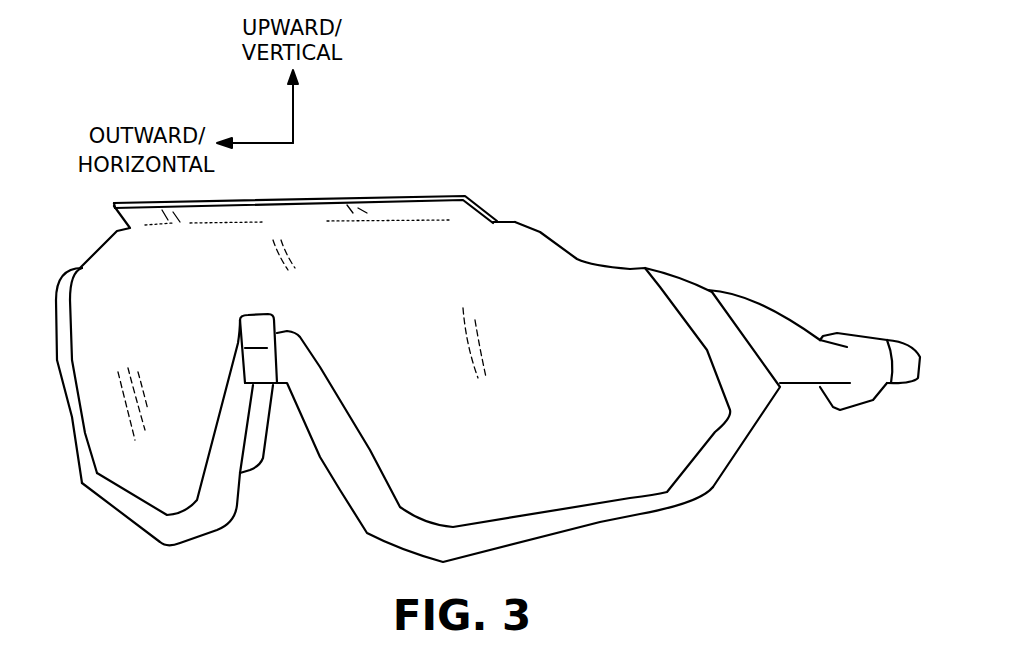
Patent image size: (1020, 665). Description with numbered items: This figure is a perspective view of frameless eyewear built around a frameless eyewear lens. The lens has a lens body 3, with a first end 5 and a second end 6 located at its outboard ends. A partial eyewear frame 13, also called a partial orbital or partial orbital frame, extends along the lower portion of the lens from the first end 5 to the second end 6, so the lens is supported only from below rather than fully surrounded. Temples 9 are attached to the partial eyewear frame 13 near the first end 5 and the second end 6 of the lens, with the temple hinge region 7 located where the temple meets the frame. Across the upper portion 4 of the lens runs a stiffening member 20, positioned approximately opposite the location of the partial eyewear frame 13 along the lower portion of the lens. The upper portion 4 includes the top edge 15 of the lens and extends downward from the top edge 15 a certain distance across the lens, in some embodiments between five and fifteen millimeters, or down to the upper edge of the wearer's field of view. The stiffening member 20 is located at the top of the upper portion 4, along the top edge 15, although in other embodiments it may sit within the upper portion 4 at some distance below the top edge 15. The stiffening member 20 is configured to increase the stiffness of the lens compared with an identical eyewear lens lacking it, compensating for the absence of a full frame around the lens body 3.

The lens body 3 is at (610, 477).
The upper portion 4 is at (530, 238).
The first end 5 is at (72, 383).
The second end 6 is at (703, 350).
The hinge portion 7 is at (752, 390).
The temples 9 is at (847, 337).
The partial eyewear frame 13 is at (160, 542).
The top edge 15 is at (505, 220).
The stiffening member 20 is at (440, 198).